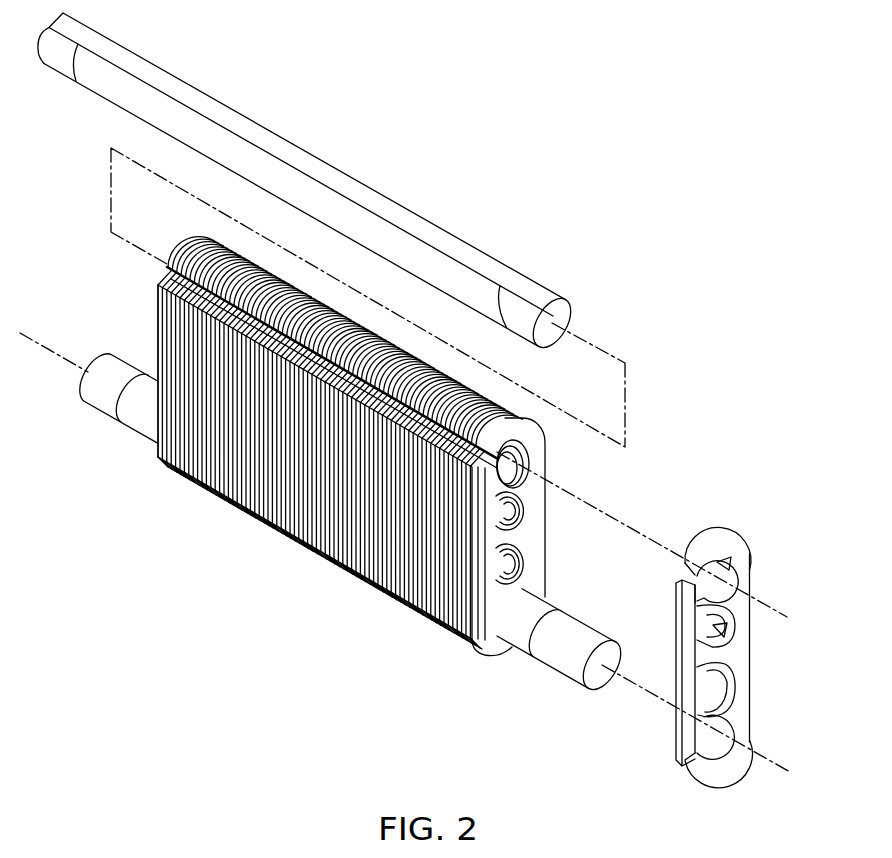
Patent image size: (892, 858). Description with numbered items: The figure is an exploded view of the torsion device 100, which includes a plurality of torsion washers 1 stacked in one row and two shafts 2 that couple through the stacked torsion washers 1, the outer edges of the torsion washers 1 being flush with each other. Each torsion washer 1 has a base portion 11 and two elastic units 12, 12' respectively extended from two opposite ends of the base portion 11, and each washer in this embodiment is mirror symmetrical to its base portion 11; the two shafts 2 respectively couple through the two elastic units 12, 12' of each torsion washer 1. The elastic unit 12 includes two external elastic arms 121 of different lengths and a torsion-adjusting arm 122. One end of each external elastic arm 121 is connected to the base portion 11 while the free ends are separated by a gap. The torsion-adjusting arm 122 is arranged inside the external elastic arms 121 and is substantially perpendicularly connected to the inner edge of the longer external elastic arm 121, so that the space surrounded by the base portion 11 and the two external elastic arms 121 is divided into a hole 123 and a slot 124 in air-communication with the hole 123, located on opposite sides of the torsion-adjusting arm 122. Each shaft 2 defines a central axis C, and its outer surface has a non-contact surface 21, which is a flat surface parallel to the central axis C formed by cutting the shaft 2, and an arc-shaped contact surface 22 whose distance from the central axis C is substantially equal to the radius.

The torsion device 100 is at (760, 45).
The torsion washer 1 is at (552, 546).
The base portion 11 is at (725, 653).
The elastic unit 12 is at (707, 565).
The elastic unit 12' is at (727, 752).
The external elastic arm 121 is at (712, 548).
The torsion-adjusting arm 122 is at (705, 616).
The hole 123 is at (718, 570).
The slot 124 is at (716, 630).
The shaft 2 is at (333, 354).
The non-contact surface 21 is at (338, 186).
The contact surface 22 is at (393, 247).
The central axis C is at (767, 608).